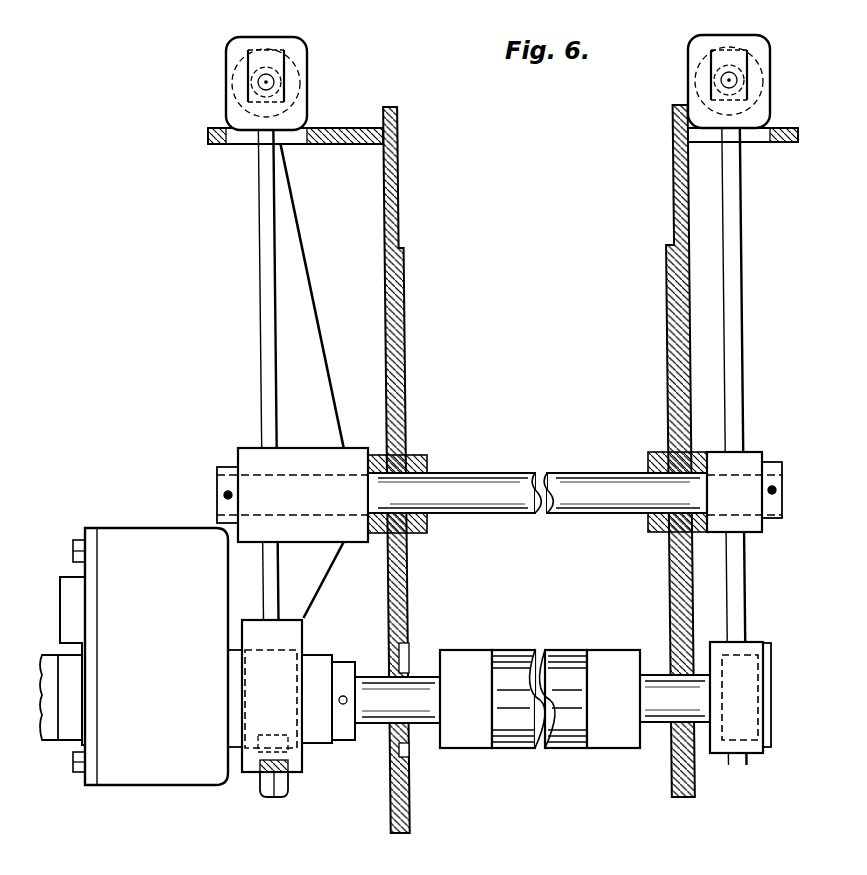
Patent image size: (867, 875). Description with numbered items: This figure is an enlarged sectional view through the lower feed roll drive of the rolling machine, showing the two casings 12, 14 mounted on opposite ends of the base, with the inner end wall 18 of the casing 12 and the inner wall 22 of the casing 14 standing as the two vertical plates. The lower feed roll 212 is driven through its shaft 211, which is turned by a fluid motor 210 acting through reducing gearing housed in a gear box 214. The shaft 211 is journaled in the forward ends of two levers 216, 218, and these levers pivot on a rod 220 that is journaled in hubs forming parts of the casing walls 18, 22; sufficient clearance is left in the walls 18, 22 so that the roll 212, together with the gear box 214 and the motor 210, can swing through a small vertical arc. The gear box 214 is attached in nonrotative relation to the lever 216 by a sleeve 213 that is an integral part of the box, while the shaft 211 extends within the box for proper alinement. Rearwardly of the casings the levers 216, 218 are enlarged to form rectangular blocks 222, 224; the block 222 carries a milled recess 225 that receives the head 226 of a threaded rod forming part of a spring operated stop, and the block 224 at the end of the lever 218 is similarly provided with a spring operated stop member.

The casing 12 is at (414, 192).
The casing 14 is at (652, 194).
The inner end wall 18 is at (398, 357).
The inner wall 22 is at (668, 339).
The fluid motor 210 is at (48, 742).
The shaft 211 is at (414, 682).
The lower feed roll 212 is at (511, 658).
The sleeve 213 is at (316, 738).
The gear box 214 is at (142, 541).
The lever 216 is at (258, 360).
The lever 218 is at (767, 330).
The rod 220 is at (482, 478).
The rectangular block 222 is at (265, 83).
The rectangular block 224 is at (690, 88).
The milled recess 225 is at (279, 76).
The head 226 is at (250, 64).